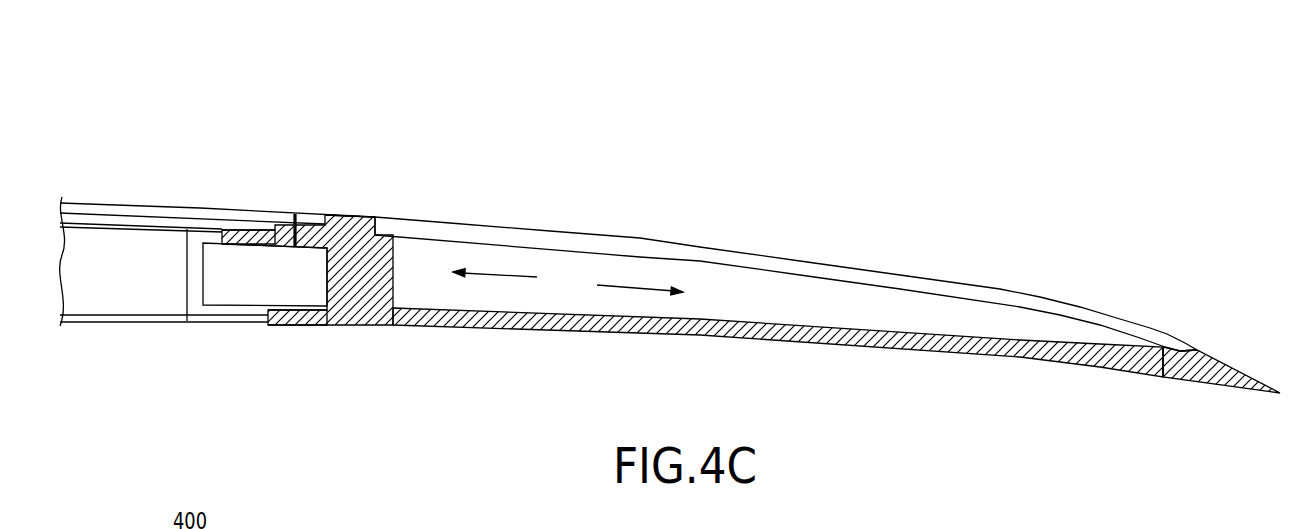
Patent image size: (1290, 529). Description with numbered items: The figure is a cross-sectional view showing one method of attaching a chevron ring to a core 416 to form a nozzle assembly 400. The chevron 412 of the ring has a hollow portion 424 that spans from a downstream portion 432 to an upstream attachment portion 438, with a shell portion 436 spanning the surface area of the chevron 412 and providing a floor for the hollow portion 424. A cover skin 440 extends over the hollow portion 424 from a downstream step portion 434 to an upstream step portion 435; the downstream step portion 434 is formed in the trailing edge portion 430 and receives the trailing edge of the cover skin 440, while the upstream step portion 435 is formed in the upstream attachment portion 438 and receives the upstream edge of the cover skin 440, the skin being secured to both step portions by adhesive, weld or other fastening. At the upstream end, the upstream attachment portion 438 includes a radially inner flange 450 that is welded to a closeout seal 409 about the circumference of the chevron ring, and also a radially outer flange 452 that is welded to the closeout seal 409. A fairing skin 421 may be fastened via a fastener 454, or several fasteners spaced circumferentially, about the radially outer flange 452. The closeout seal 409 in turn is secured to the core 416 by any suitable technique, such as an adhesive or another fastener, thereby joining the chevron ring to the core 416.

The nozzle assembly 400 is at (307, 80).
The closeout seal 409 is at (193, 282).
The chevron 412 is at (907, 257).
The core 416 is at (78, 303).
The fairing skin 421 is at (88, 205).
The hollow portion 424 is at (568, 282).
The trailing edge portion 430 is at (1207, 374).
The downstream portion 432 is at (1198, 350).
The downstream step portion 434 is at (1163, 350).
The upstream step portion 435 is at (373, 218).
The shell portion 436 is at (603, 322).
The upstream attachment portion 438 is at (372, 302).
The cover skin 440 is at (675, 253).
The radially inner flange 450 is at (273, 312).
The radially outer flange 452 is at (282, 227).
The fastener 454 is at (295, 215).